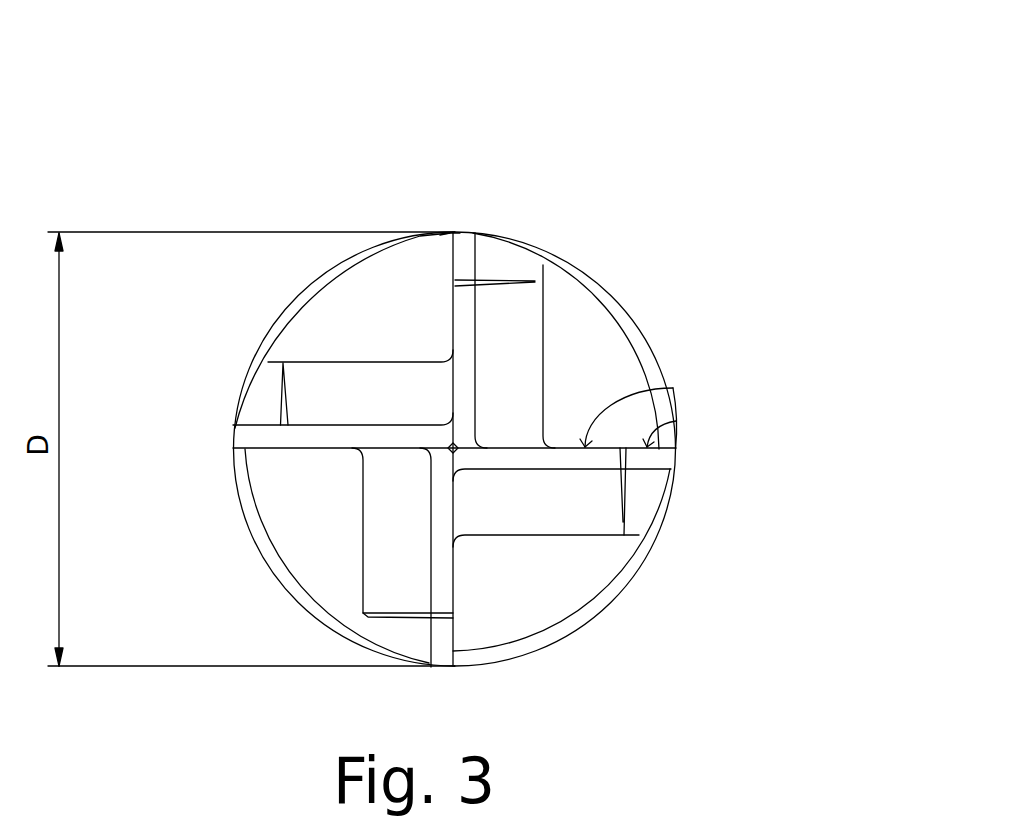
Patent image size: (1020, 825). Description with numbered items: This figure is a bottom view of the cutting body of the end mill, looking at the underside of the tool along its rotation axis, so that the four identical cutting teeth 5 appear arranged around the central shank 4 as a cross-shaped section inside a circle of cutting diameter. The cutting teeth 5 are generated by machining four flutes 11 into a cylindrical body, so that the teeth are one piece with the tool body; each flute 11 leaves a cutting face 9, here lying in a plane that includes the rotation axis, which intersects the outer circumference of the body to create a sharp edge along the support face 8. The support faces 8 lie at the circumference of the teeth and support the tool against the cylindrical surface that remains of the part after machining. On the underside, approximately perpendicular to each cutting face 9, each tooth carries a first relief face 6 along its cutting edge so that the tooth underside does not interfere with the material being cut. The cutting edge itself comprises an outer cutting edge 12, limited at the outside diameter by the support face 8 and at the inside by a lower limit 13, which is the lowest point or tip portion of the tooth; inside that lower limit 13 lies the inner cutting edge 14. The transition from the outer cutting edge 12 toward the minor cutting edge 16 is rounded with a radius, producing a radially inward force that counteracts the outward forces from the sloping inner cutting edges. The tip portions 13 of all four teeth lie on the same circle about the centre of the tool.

The shank 4 is at (322, 290).
The cutting teeth 5 is at (343, 402).
The first relief face 6 is at (462, 318).
The support face 8 is at (467, 233).
The cutting face 9 is at (450, 295).
The flute 11 is at (615, 406).
The outer cutting edge 12 is at (648, 445).
The lower limit 13 is at (677, 422).
The inner cutting edge 14 is at (678, 395).
The minor cutting edge 16 is at (453, 232).